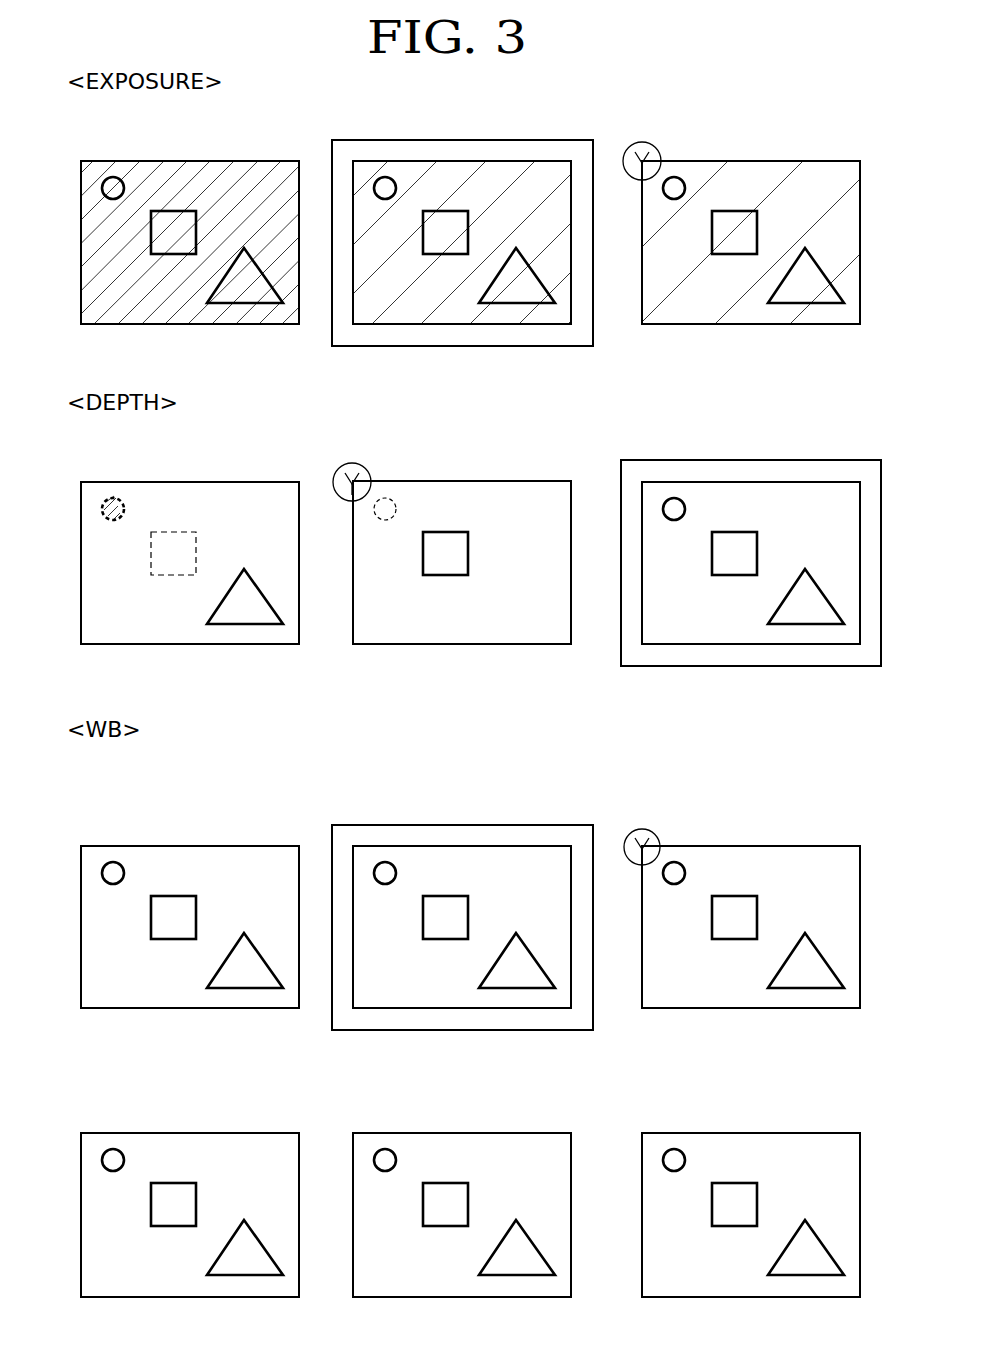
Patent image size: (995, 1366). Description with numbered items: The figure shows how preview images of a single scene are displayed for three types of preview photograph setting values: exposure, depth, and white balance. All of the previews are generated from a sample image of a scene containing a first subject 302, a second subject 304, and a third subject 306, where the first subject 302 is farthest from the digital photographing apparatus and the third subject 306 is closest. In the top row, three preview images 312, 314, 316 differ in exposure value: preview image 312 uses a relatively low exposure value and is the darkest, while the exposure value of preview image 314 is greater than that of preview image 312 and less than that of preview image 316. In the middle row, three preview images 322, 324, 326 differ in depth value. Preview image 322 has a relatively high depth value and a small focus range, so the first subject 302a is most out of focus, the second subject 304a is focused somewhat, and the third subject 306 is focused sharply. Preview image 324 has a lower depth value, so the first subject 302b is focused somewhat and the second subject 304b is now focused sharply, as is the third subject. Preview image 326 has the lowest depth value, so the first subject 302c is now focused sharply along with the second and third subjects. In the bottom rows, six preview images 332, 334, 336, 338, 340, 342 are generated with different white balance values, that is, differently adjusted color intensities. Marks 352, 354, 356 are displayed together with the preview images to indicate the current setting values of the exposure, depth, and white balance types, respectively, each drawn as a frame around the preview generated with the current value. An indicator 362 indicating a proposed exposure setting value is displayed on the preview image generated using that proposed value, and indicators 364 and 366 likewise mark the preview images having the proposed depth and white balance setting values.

The first subject 302 is at (102, 188).
The second subject 304 is at (151, 229).
The third subject 306 is at (222, 280).
The preview image 312 is at (239, 161).
The preview image 314 is at (511, 161).
The preview image 316 is at (800, 161).
The preview image 322 is at (190, 482).
The preview image 324 is at (527, 481).
The preview image 326 is at (816, 482).
The preview image 332 is at (239, 846).
The preview image 334 is at (511, 846).
The preview image 336 is at (800, 846).
The preview image 338 is at (239, 1133).
The preview image 340 is at (511, 1133).
The preview image 342 is at (800, 1133).
The mark 352 is at (435, 140).
The mark 354 is at (745, 460).
The mark 356 is at (435, 825).
The indicator 362 is at (642, 142).
The indicator 364 is at (352, 463).
The indicator 366 is at (641, 829).
The first subject 302a is at (102, 508).
The second subject 304a is at (151, 552).
The first subject 302b is at (391, 499).
The second subject 304b is at (452, 531).
The first subject 302c is at (674, 498).